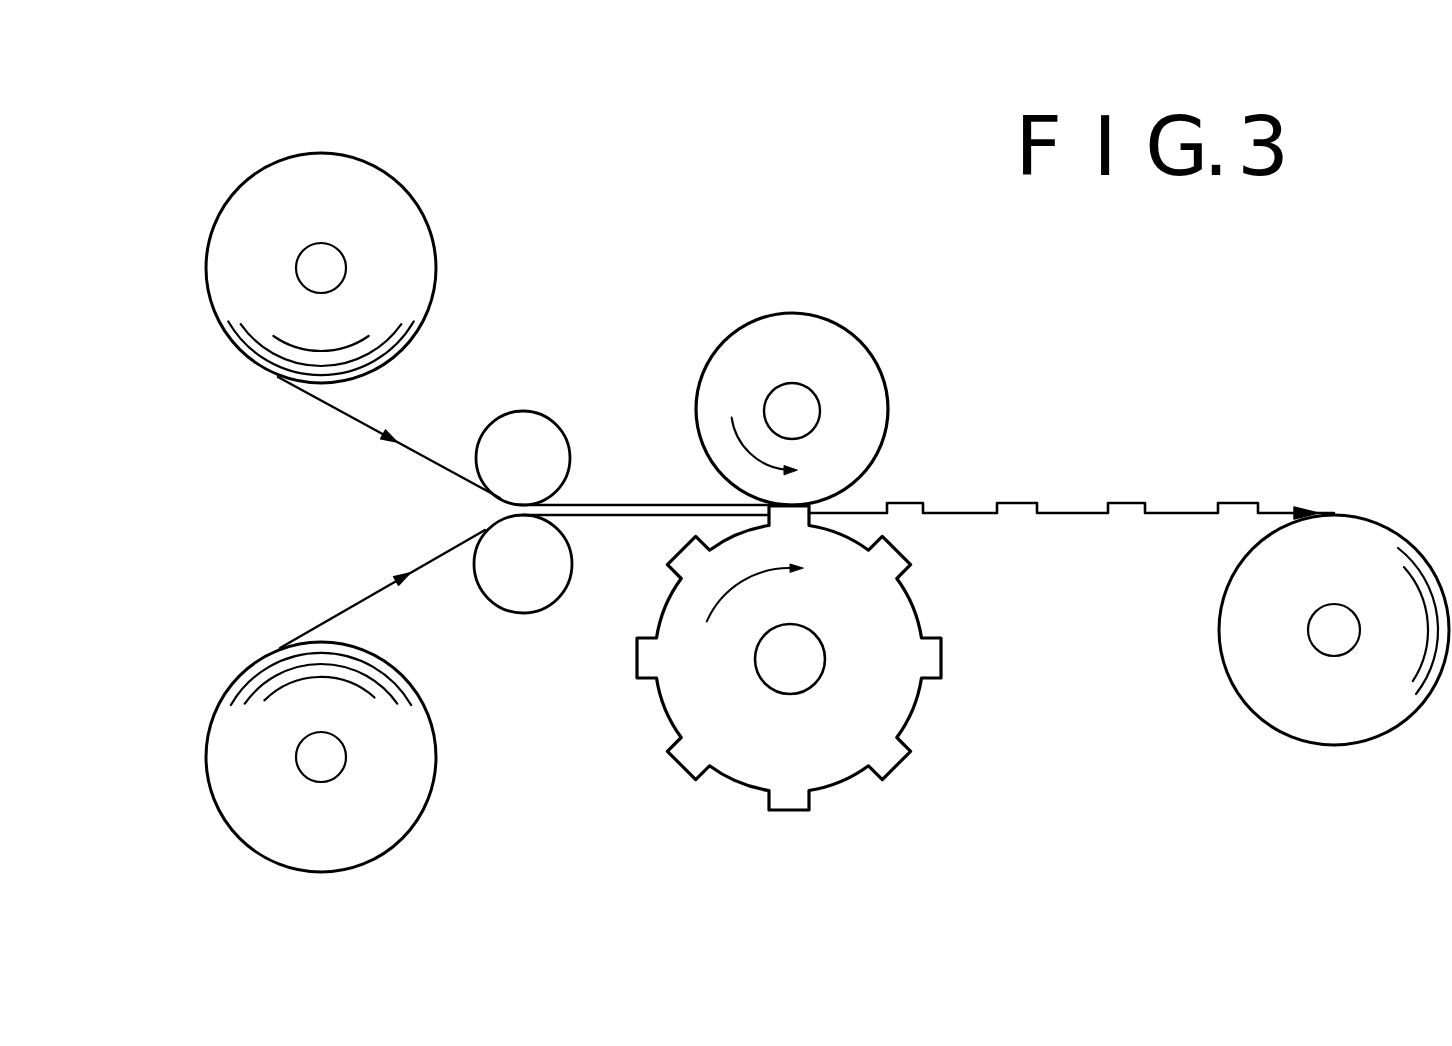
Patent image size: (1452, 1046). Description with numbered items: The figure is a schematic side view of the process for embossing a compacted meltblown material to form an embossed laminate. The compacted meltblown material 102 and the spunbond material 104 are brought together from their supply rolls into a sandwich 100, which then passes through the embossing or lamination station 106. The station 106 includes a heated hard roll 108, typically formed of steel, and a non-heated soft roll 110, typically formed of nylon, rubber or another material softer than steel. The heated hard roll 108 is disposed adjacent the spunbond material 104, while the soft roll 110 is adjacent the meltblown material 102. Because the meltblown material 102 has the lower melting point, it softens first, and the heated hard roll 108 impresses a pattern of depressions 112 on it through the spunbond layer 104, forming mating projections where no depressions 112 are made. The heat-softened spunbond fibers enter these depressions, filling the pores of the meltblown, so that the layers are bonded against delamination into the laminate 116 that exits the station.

The sandwich 100 is at (640, 518).
The compacted meltblown material 102 is at (320, 402).
The spunbond material 104 is at (333, 616).
The embossing station 106 is at (830, 561).
The heated hard roll 108 is at (853, 780).
The non-heated soft roll 110 is at (778, 330).
The depressions 112 is at (1128, 503).
The laminate 116 is at (1177, 518).